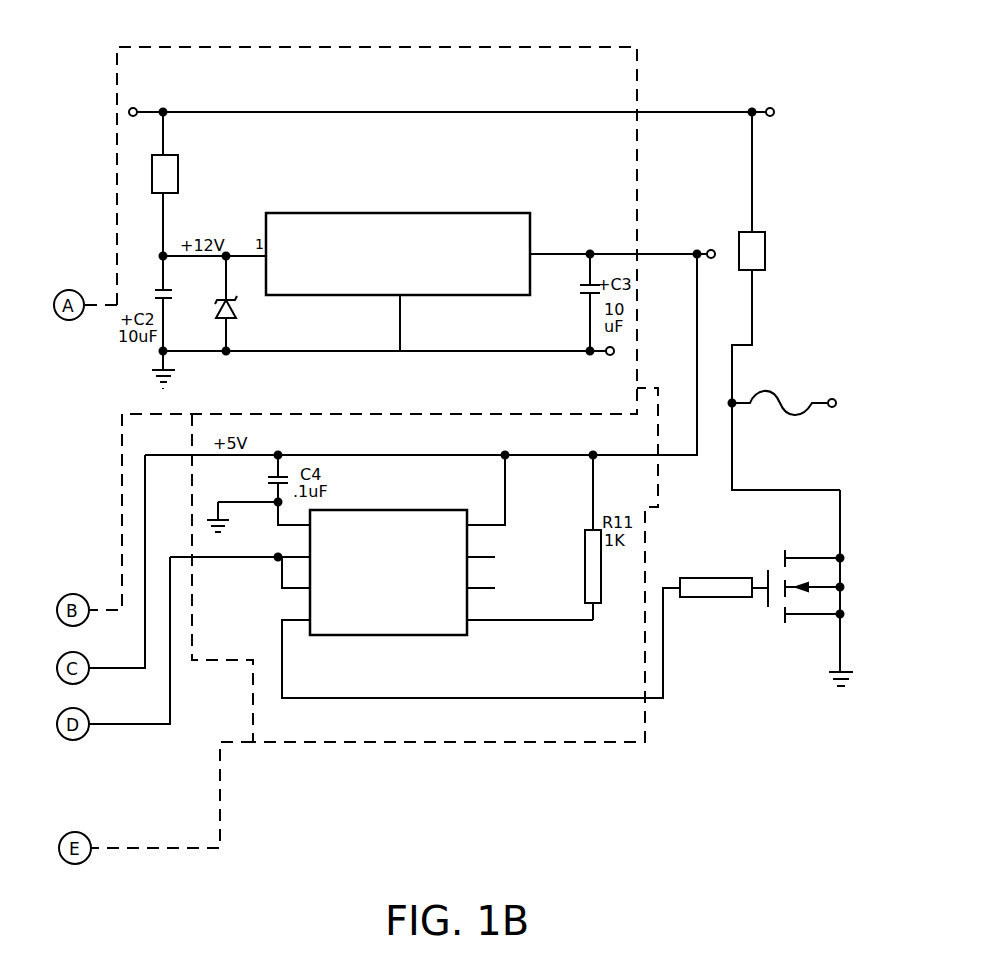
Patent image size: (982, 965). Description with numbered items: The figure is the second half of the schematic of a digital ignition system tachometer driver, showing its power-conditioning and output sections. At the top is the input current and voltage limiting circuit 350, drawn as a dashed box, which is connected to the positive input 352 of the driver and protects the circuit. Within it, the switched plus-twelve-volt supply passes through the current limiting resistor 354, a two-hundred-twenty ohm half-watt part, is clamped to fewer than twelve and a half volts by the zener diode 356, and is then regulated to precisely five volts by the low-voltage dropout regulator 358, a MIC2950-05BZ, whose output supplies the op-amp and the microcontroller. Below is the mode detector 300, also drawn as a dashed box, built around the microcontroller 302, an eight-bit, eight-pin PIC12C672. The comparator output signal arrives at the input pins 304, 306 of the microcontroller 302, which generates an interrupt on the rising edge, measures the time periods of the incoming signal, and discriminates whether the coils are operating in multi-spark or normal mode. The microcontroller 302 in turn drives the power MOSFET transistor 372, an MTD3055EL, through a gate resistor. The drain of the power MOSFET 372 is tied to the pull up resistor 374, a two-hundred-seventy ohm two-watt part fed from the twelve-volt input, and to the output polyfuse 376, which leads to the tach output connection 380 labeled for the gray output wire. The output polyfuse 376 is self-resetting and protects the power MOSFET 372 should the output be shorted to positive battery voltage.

The mode detector 300 is at (375, 748).
The microcontroller 302 is at (460, 637).
The input pin 304 is at (282, 557).
The input pin 306 is at (286, 597).
The input current and voltage limiting circuit 350 is at (572, 62).
The positive input 352 is at (151, 110).
The current limiting resistor 354 is at (152, 163).
The zener diode 356 is at (222, 302).
The low-voltage dropout regulator 358 is at (490, 212).
The power MOSFET transistor 372 is at (840, 622).
The pull up resistor 374 is at (738, 250).
The output polyfuse 376 is at (778, 391).
The tach output connector 380 is at (816, 406).